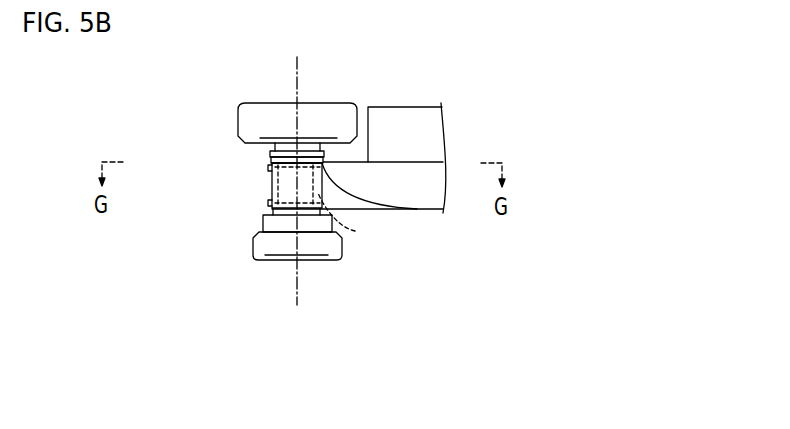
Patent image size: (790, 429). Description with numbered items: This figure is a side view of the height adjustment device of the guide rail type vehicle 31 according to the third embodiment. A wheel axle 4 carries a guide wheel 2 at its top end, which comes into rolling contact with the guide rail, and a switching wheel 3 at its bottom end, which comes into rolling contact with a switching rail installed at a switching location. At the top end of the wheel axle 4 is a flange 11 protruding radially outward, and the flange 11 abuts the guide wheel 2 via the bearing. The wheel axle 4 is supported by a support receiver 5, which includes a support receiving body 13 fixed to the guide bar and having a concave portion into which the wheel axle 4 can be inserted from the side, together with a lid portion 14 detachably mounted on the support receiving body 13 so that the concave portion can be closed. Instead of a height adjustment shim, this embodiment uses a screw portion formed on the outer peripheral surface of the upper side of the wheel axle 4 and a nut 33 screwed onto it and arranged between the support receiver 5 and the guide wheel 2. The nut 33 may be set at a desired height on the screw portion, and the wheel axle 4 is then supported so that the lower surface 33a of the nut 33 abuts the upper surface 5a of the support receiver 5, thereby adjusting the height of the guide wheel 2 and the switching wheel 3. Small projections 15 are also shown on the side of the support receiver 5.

The guide wheel 2 is at (320, 103).
The switching wheel 3 is at (322, 262).
The wheel axle 4 is at (355, 231).
The support receiver 5 is at (328, 206).
The upper surface 5a is at (287, 160).
The flange 11 is at (270, 156).
The support receiving body 13 is at (336, 214).
The lid portion 14 is at (269, 188).
The projections 15 is at (267, 168).
The guide rail type vehicle 31 is at (439, 256).
The nut 33 is at (268, 161).
The lower surface 33a is at (378, 198).